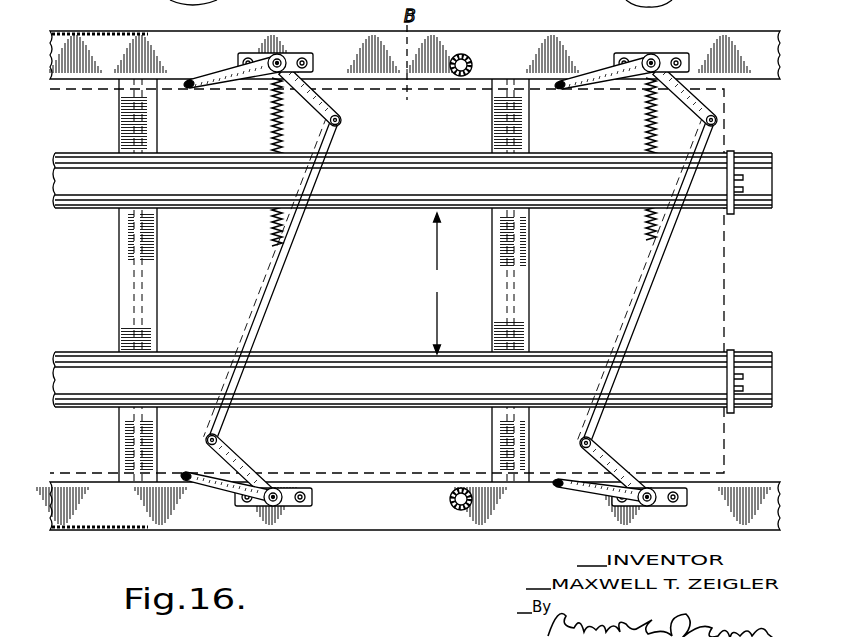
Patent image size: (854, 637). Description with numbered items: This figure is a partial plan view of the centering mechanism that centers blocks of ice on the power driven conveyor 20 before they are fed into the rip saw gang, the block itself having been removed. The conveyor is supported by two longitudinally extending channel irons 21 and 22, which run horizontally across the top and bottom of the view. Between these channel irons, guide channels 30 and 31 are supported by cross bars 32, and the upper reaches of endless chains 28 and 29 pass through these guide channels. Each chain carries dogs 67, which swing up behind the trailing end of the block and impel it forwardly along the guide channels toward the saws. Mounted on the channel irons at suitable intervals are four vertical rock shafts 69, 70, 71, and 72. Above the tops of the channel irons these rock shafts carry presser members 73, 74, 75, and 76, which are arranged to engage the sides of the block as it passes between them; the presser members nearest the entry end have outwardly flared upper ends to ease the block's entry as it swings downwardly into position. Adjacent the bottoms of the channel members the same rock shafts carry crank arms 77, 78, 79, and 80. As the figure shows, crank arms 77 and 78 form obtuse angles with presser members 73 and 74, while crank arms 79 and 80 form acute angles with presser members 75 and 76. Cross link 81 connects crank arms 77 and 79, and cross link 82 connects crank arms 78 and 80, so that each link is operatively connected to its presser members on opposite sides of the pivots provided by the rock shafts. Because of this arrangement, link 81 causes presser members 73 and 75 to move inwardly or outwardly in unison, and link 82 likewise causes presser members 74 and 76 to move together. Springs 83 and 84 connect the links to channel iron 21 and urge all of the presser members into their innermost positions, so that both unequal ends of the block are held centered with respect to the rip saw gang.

The power driven conveyor 20 is at (438, 283).
The longitudinally extending channel 21 is at (497, 53).
The longitudinally extending channel 22 is at (382, 515).
The endless chain 28 is at (398, 201).
The endless chain 29 is at (459, 363).
The guide channel 30 is at (431, 155).
The guide channel 31 is at (388, 405).
The cross bar 32 is at (512, 274).
The dog 67 is at (729, 362).
The vertical rock shaft 69 is at (251, 47).
The vertical rock shaft 70 is at (632, 48).
The vertical rock shaft 71 is at (249, 502).
The vertical rock shaft 72 is at (621, 507).
The presser member 73 is at (235, 73).
The presser member 74 is at (611, 73).
The presser member 75 is at (213, 490).
The presser member 76 is at (599, 491).
The crank arm 77 is at (333, 105).
The crank arm 78 is at (714, 108).
The crank arm 79 is at (233, 450).
The crank arm 80 is at (616, 465).
The cross link 81 is at (272, 297).
The cross link 82 is at (644, 310).
The spring 83 is at (270, 128).
The spring 84 is at (643, 115).